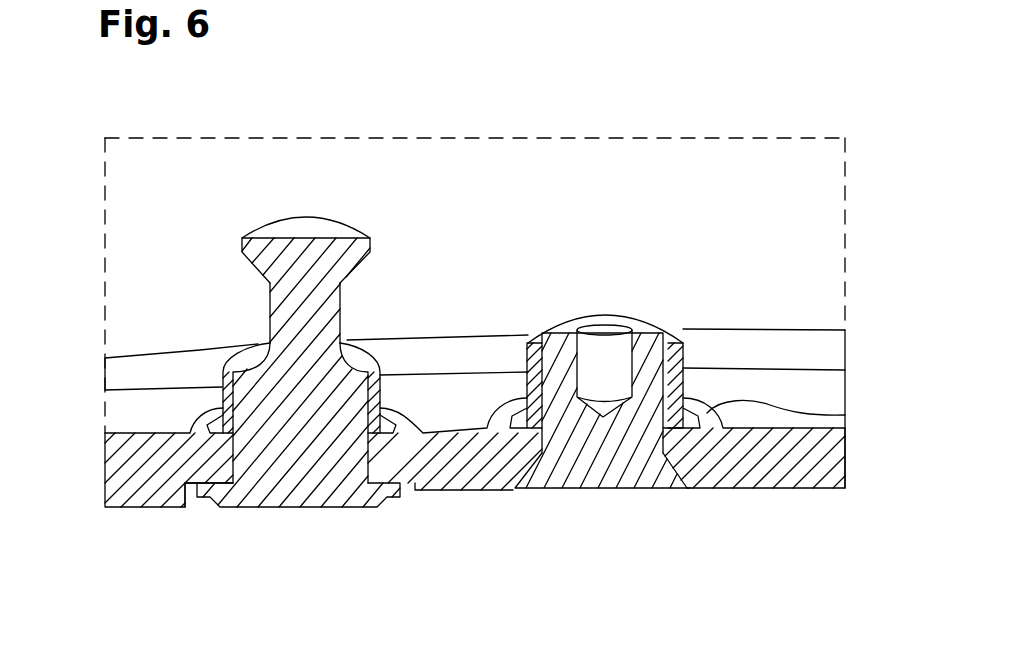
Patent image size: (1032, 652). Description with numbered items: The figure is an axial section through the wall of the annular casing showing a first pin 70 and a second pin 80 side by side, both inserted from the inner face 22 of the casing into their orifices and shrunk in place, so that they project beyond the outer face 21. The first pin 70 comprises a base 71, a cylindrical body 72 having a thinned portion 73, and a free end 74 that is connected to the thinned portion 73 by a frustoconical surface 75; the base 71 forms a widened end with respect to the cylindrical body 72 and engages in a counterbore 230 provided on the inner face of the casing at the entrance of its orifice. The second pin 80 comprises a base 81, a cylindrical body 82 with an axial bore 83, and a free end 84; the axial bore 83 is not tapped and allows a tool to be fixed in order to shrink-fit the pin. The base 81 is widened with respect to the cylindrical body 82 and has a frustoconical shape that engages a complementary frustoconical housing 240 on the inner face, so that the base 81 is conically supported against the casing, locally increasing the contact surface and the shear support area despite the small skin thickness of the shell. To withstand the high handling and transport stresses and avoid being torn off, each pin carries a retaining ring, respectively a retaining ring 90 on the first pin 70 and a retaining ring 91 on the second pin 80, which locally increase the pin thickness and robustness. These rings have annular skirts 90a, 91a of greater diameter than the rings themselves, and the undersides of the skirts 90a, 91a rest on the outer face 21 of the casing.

The outer face 21 is at (776, 391).
The inner face 22 is at (475, 511).
The counterbore 230 is at (190, 522).
The housing 240 is at (697, 503).
The first pin 70 is at (297, 329).
The base 71 is at (357, 490).
The cylindrical body 72 is at (290, 405).
The thinned portion 73 is at (310, 307).
The free end 74 is at (303, 227).
The frustoconical surface 75 is at (366, 265).
The second pin 80 is at (600, 317).
The base 81 is at (557, 488).
The cylindrical body 82 is at (647, 370).
The axial bore 83 is at (603, 350).
The free end 84 is at (558, 333).
The retaining ring 90 is at (207, 409).
The annular skirt 90a is at (195, 438).
The retaining ring 91 is at (686, 362).
The annular skirt 91a is at (845, 415).